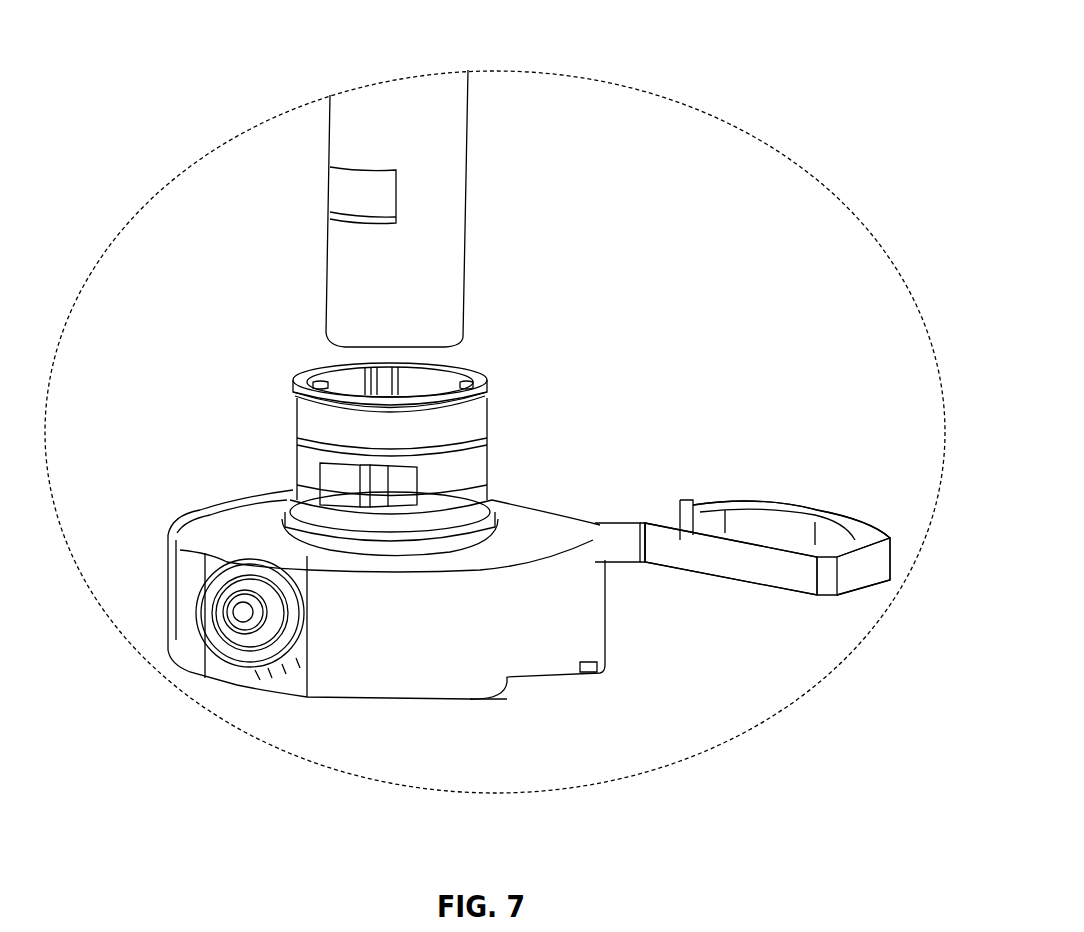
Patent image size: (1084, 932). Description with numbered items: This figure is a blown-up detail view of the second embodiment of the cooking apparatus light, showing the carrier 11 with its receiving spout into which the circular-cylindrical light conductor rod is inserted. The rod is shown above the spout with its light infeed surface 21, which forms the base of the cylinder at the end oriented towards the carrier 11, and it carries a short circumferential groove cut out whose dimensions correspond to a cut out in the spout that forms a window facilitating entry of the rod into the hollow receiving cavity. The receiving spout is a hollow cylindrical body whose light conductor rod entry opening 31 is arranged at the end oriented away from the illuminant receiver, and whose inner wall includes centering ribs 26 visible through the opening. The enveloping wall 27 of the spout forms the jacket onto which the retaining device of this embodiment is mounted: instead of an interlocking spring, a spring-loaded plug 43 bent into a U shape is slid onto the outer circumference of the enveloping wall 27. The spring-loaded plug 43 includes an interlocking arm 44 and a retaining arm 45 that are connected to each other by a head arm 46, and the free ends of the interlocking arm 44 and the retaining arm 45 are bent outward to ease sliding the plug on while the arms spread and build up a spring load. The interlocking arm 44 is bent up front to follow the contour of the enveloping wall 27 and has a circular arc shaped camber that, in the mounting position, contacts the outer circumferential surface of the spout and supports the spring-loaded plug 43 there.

The carrier 11 is at (617, 605).
The light infeed surface 21 is at (440, 348).
The centering ribs 26 is at (332, 386).
The enveloping wall 27 is at (470, 473).
The light conductor rod entry opening 31 is at (330, 380).
The spring-loaded plug 43 is at (781, 480).
The interlocking arm 44 is at (810, 505).
The retaining arm 45 is at (747, 563).
The head arm 46 is at (860, 572).